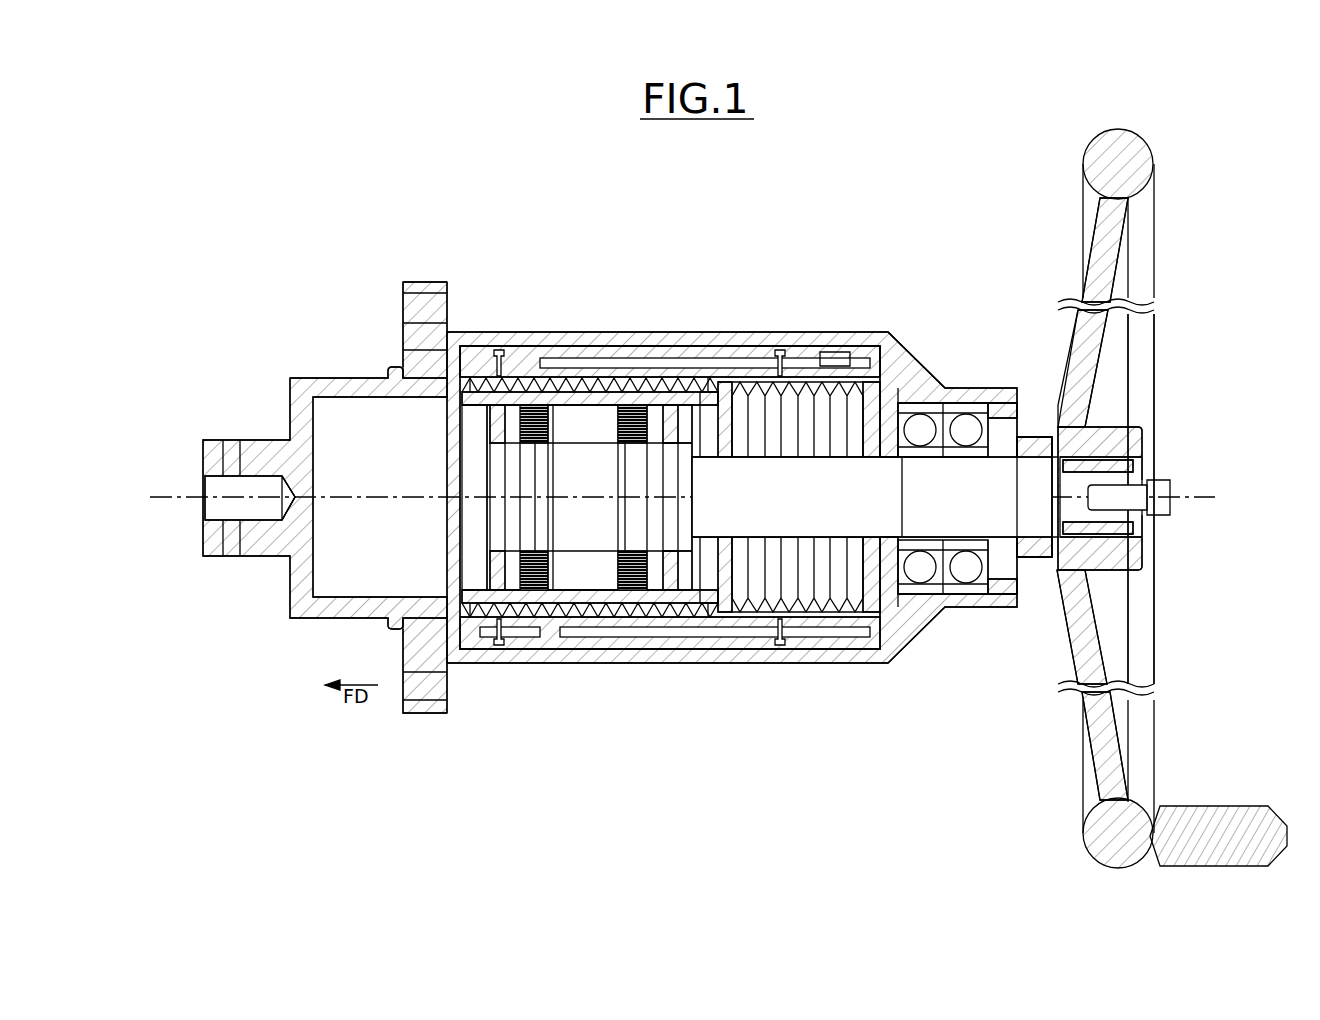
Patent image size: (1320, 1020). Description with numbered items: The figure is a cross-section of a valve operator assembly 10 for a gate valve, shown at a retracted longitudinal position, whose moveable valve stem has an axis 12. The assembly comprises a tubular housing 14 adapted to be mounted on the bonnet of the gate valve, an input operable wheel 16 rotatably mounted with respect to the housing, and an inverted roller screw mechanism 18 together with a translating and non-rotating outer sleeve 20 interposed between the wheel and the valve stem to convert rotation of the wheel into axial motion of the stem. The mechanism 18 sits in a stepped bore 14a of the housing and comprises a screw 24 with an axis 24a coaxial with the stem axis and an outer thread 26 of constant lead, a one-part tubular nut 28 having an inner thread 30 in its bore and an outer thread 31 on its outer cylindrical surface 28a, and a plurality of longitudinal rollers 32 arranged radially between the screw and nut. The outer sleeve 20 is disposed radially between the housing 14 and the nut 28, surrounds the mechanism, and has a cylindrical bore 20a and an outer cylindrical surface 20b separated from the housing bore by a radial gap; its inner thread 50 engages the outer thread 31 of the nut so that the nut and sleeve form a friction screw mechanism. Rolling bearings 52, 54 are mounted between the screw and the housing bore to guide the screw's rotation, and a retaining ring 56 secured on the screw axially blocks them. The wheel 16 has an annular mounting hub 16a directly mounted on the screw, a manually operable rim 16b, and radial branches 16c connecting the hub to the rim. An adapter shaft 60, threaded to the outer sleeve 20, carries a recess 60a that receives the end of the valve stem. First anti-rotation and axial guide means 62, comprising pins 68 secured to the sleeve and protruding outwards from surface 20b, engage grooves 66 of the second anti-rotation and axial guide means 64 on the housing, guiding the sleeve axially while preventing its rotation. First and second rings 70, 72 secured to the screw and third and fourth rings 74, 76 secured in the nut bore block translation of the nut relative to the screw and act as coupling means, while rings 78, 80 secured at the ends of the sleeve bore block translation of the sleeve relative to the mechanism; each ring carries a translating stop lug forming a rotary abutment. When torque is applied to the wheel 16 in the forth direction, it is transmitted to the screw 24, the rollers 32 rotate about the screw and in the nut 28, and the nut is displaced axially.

The valve operator assembly 10 is at (820, 240).
The axis 12 is at (152, 497).
The axis 24a is at (200, 497).
The tubular housing 14 is at (665, 332).
The bore 14a is at (945, 375).
The input operable wheel 16 is at (1152, 143).
The annular mounting hub 16a is at (1122, 553).
The operable rim 16b is at (1142, 405).
The radial arms or branches 16c is at (1085, 370).
The inverted roller screw mechanism 18 is at (760, 610).
The outer sleeve 20 is at (630, 640).
The cylindrical bore 20a is at (468, 368).
The outer cylindrical surface 20b is at (860, 352).
The screw 24 is at (820, 560).
The outer thread 26 is at (580, 580).
The nut 28 is at (540, 400).
The outer cylindrical surface 28a is at (752, 420).
The inner thread 30 is at (575, 425).
The outer thread 31 is at (600, 395).
The longitudinal rollers 32 is at (560, 575).
The inner thread 50 is at (742, 395).
The rolling bearing 52 is at (975, 597).
The rolling bearing 54 is at (1000, 598).
The retaining ring 56 is at (1040, 560).
The adapter shaft 60 is at (340, 372).
The recess 60a is at (205, 510).
The first anti-rotation and axial guide means 62 is at (823, 372).
The second anti-rotation and axial guide means 64 is at (700, 352).
The grooves 66 is at (640, 372).
The pins 68 is at (499, 352).
The first ring 70 is at (478, 590).
The second ring 72 is at (686, 600).
The third ring 74 is at (443, 700).
The fourth ring 76 is at (725, 600).
The first ring 78 is at (408, 713).
The second ring 80 is at (930, 595).